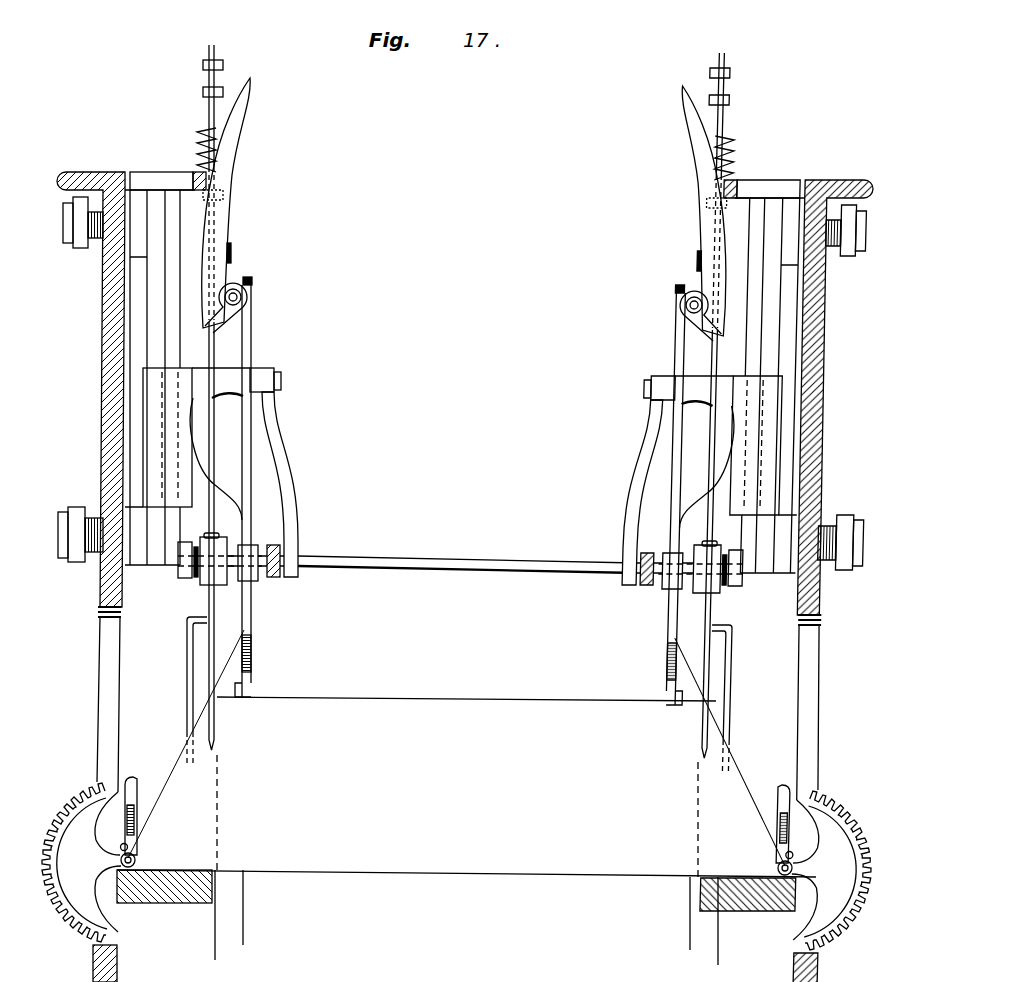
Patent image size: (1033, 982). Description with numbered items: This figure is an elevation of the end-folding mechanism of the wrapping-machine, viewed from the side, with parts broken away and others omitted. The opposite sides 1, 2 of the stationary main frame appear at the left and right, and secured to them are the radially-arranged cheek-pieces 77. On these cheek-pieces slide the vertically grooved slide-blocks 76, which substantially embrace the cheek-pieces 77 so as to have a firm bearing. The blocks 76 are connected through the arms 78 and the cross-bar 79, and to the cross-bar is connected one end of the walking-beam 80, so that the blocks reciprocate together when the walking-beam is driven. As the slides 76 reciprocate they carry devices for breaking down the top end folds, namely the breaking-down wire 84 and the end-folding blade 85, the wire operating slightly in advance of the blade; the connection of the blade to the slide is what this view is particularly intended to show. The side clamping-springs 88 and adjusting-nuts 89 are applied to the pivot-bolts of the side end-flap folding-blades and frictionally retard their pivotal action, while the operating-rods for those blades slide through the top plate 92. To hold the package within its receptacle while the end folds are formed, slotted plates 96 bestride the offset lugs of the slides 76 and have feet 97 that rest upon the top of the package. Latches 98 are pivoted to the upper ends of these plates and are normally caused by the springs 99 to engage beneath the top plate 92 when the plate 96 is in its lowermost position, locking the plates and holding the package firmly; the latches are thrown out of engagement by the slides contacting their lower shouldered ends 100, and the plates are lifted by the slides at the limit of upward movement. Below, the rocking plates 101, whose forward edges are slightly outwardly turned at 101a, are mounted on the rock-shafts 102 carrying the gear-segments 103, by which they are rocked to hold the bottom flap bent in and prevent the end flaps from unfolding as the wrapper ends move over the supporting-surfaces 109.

The side of the main frame 1 is at (108, 302).
The side of the main frame 2 is at (818, 307).
The slide-block 76 is at (150, 408).
The cheek-piece 77 is at (168, 333).
The arm 78 is at (292, 475).
The cross-bar 79 is at (454, 570).
The walking-beam 80 is at (273, 577).
The breaking-down wire 84 is at (188, 688).
The end-folding blade 85 is at (210, 750).
The side clamping-spring 88 is at (197, 582).
The adjusting-nut 89 is at (180, 580).
The top plate 92 is at (168, 178).
The slotted plate 96 is at (245, 420).
The foot 97 is at (238, 698).
The latch 98 is at (228, 207).
The spring 99 is at (233, 255).
The shouldered end 100 is at (242, 334).
The rocking plate 101 is at (134, 806).
The outwardly turned forward edge 101a is at (134, 778).
The rock-shaft 102 is at (135, 858).
The gear-segment 103 is at (457, 866).
The supporting-surface 109 is at (167, 902).